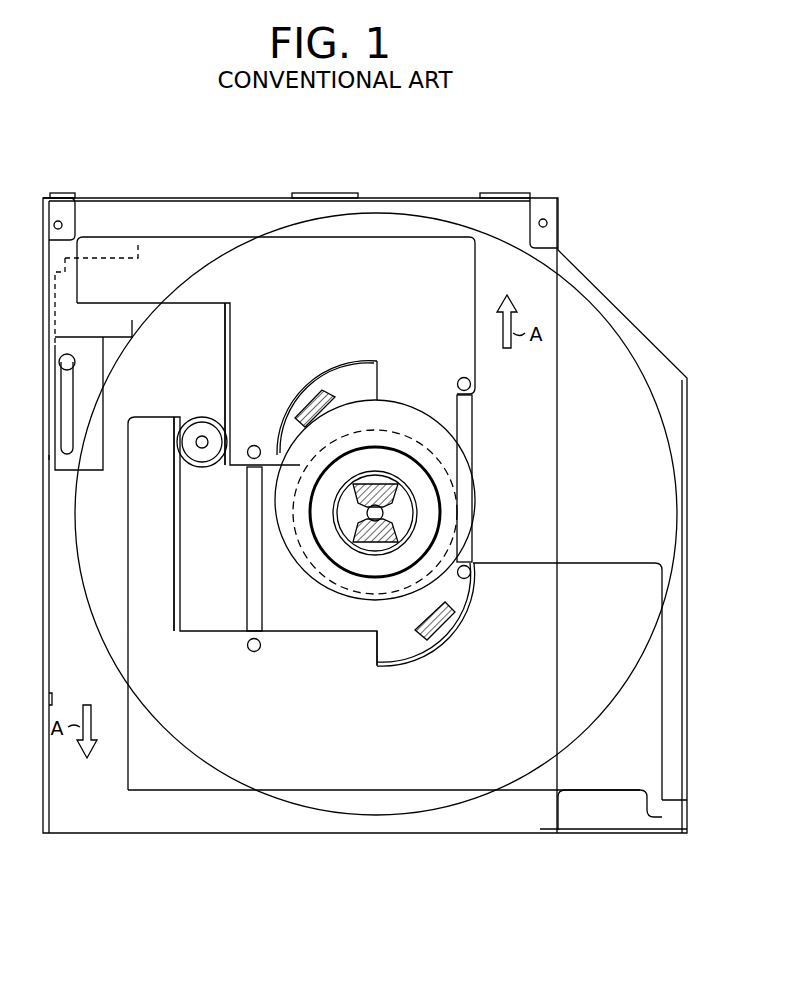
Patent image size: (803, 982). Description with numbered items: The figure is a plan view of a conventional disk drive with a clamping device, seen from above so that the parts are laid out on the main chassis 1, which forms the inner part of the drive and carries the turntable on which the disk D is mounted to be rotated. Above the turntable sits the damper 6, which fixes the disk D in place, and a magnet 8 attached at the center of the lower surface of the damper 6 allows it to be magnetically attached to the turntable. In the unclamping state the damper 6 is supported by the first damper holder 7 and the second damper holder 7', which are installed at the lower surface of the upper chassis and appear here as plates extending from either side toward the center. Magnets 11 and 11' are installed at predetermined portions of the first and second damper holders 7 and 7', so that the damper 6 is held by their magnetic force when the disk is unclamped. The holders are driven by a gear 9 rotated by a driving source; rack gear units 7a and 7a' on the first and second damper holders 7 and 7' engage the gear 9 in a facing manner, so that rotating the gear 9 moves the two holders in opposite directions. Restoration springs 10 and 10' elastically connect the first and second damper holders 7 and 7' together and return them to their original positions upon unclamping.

The main chassis 1 is at (502, 833).
The damper 6 is at (397, 432).
The first damper holder 7 is at (276, 421).
The rack gear unit 7a is at (258, 384).
The second damper holder 7' is at (395, 653).
The rack gear unit 7a' is at (128, 524).
The magnet 8 is at (363, 547).
The gear 9 is at (197, 407).
The restoration spring 10 is at (495, 478).
The restoration spring 10' is at (224, 549).
The magnet 11 is at (327, 386).
The magnet 11' is at (439, 620).
The disk D is at (633, 353).